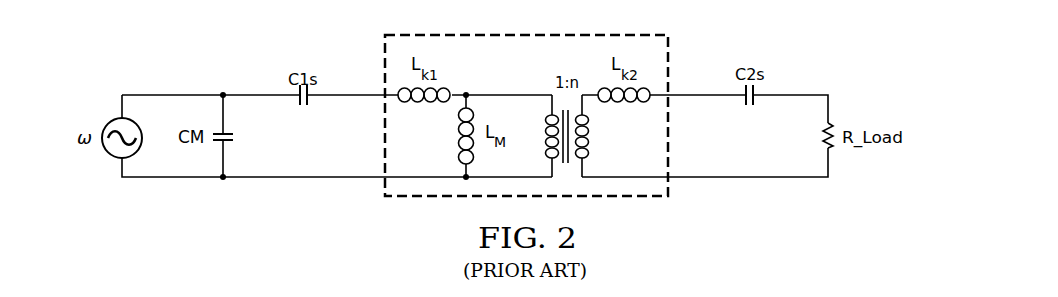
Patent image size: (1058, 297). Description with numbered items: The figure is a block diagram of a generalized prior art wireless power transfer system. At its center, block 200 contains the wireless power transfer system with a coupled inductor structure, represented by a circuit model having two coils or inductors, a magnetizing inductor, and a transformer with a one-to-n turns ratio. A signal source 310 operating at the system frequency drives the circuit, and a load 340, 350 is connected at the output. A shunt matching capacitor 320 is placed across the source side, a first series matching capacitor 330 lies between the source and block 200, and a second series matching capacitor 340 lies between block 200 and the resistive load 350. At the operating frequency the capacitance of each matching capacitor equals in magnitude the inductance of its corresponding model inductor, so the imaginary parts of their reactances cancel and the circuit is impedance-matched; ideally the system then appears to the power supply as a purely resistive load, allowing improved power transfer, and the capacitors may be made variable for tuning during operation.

The wireless power transfer system block 200 is at (668, 67).
The signal source 310 is at (116, 118).
The matching capacitor CM 320 is at (235, 137).
The matching capacitor C1s 330 is at (304, 107).
The matching capacitor C2s 340 is at (749, 107).
The load 350 is at (823, 134).